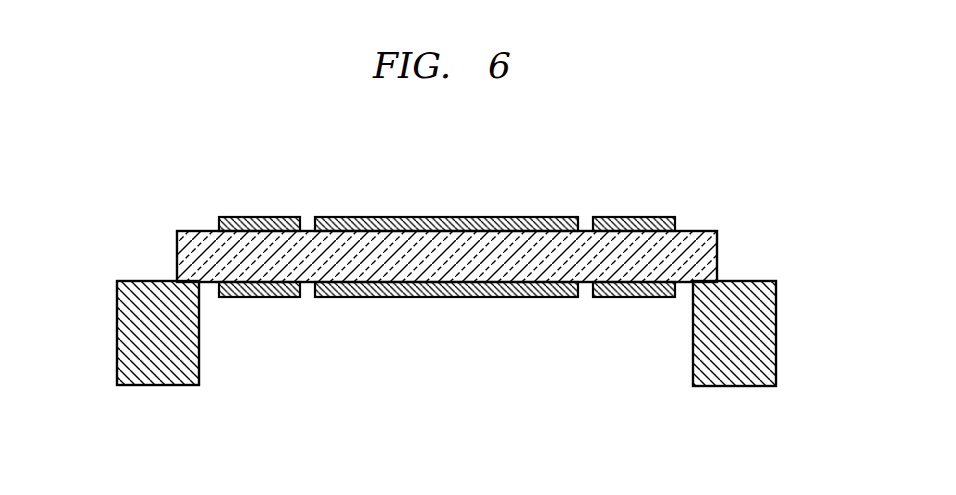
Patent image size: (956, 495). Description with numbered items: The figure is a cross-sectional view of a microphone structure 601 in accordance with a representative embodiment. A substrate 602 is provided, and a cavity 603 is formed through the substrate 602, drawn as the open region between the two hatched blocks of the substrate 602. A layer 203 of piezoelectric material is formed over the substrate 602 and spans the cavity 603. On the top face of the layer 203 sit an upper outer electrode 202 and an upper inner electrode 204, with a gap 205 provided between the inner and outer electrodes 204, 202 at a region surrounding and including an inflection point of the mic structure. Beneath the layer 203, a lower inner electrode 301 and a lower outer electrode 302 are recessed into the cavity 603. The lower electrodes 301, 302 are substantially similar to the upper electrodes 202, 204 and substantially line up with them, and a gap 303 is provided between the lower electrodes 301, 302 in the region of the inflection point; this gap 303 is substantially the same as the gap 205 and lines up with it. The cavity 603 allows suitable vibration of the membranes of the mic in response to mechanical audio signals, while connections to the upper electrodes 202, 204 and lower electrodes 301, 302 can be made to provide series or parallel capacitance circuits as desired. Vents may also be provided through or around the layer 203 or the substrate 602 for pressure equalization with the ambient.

The microphone structure 601 is at (728, 129).
The cavity 603 is at (515, 357).
The layer of piezoelectric material 203 is at (177, 247).
The upper outer electrode 202 is at (246, 215).
The upper inner electrode 204 is at (448, 217).
The gap 205 is at (308, 228).
The lower outer electrode 302 is at (243, 297).
The lower inner electrode 301 is at (442, 298).
The gap 303 is at (308, 297).
The substrate 602 is at (117, 330).